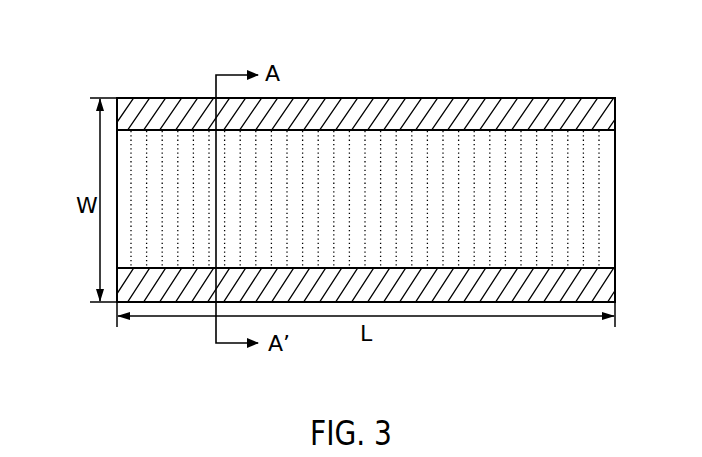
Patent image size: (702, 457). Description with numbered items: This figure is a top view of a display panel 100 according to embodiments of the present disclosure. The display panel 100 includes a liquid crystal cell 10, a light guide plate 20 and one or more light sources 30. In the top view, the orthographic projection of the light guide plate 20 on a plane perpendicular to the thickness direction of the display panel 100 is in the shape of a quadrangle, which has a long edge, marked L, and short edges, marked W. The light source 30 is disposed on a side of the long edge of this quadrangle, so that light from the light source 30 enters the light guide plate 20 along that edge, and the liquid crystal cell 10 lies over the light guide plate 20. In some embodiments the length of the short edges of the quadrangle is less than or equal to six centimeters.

The display panel 100 is at (93, 37).
The liquid crystal cell 10 is at (582, 163).
The light guide plate 20 is at (588, 204).
The light source 30 is at (590, 116).